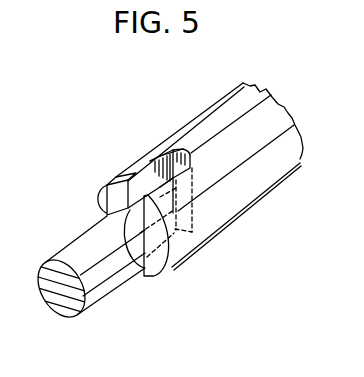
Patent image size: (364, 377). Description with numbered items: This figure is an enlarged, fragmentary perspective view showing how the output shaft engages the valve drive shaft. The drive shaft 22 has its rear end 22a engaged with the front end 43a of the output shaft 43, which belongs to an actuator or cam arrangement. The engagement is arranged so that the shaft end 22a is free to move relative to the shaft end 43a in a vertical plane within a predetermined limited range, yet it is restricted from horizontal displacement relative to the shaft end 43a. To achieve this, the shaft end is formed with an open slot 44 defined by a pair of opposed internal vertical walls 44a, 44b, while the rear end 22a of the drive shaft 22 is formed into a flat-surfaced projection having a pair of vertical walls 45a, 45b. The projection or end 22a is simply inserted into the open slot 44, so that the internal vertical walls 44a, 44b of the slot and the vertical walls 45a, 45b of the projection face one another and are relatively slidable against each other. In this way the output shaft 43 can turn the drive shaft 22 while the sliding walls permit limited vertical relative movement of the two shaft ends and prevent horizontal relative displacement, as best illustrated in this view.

The drive shaft 22 is at (86, 308).
The rear end of drive shaft 22a is at (128, 178).
The output shaft 43 is at (265, 122).
The front end of output shaft 43a is at (183, 258).
The open slot 44 is at (176, 148).
The internal vertical wall 44a is at (160, 165).
The internal vertical wall 44b is at (193, 180).
The vertical wall 45a is at (104, 188).
The vertical wall 45b is at (132, 267).